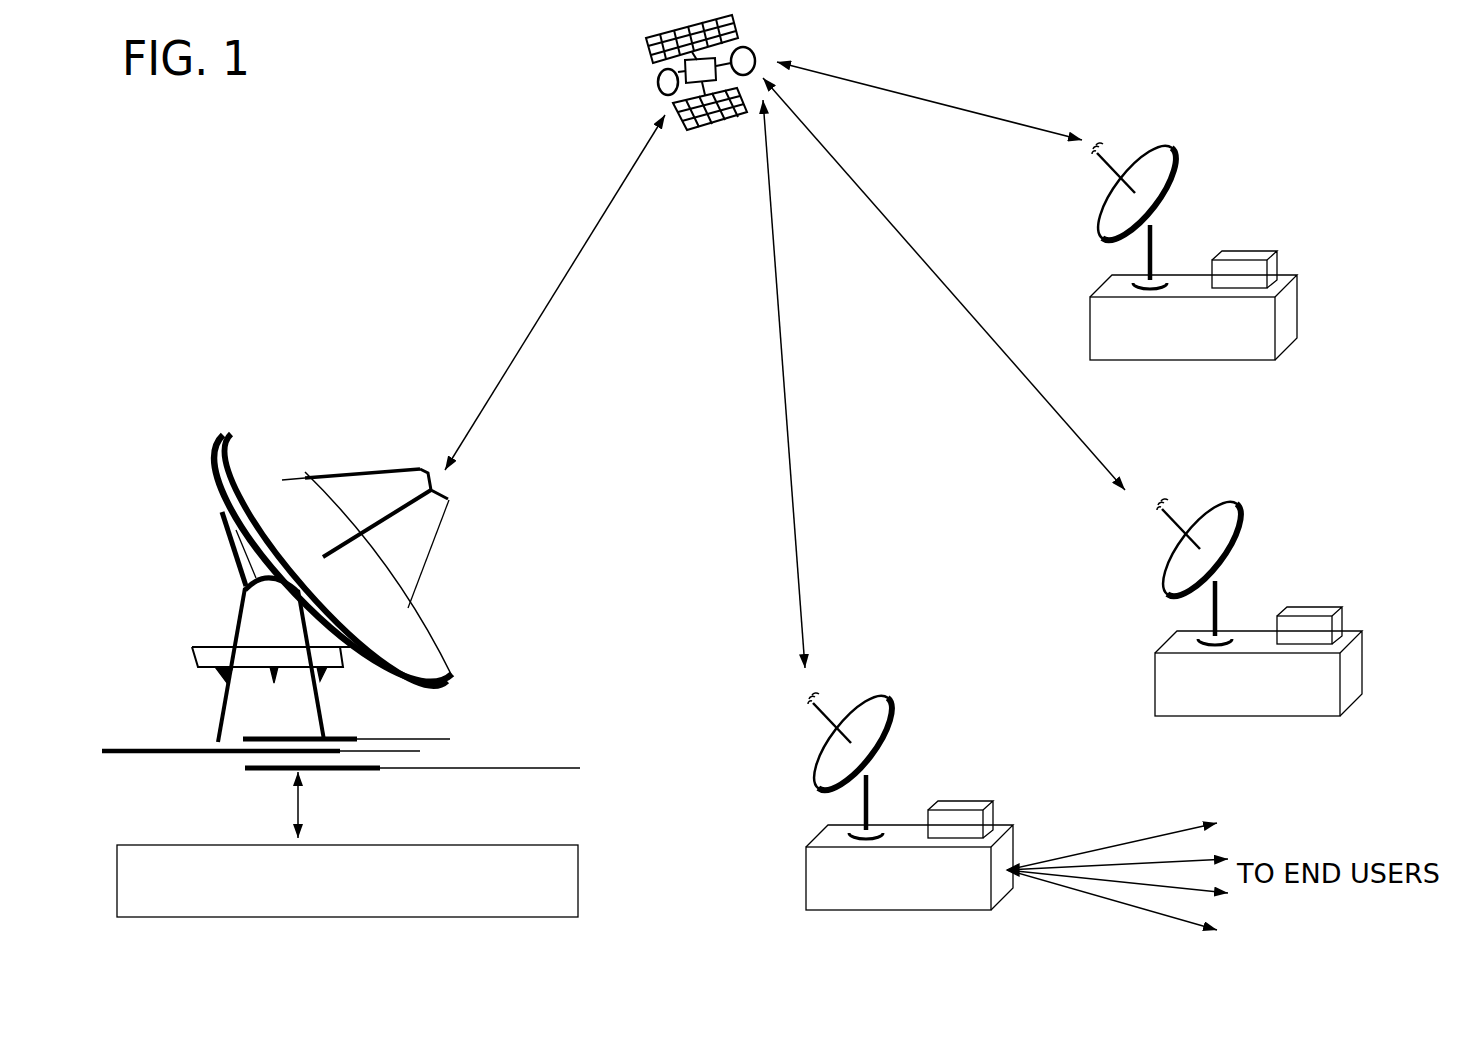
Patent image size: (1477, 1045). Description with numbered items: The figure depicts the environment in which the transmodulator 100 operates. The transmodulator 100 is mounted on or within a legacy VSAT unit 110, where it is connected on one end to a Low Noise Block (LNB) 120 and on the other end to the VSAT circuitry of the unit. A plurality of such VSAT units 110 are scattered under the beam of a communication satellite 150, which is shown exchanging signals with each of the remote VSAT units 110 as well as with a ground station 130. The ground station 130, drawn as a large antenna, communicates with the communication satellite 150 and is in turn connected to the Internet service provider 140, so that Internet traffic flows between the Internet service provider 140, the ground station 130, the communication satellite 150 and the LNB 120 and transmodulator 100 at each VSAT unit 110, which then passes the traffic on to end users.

The transmodulator 100 is at (960, 806).
The legacy VSAT unit 110 is at (806, 885).
The Low Noise Block (LNB) 120 is at (807, 705).
The ground station 130 is at (242, 620).
The Internet service provider 140 is at (193, 838).
The communication satellite 150 is at (647, 75).